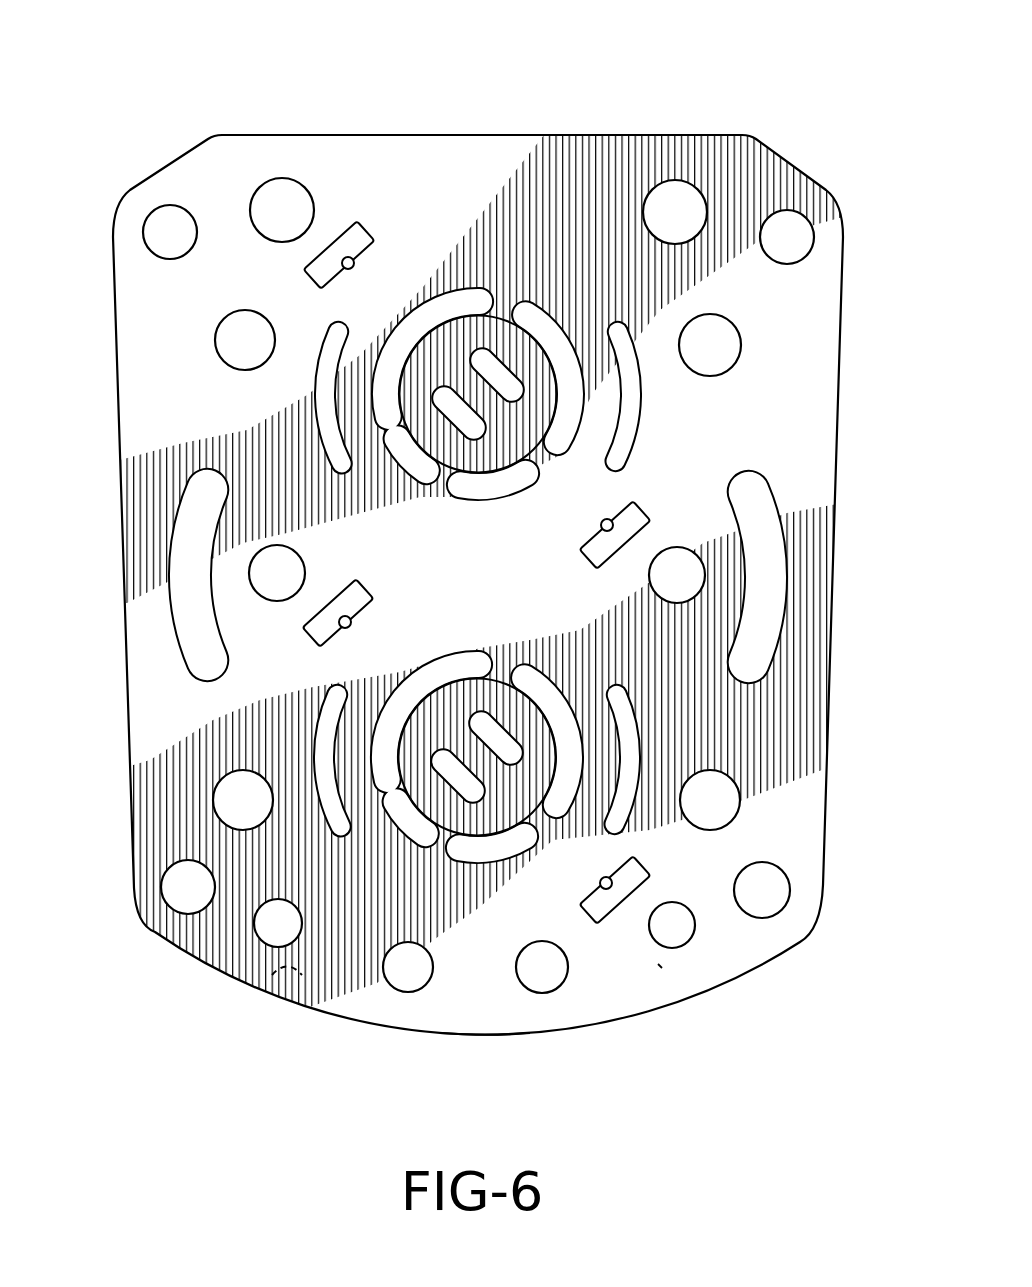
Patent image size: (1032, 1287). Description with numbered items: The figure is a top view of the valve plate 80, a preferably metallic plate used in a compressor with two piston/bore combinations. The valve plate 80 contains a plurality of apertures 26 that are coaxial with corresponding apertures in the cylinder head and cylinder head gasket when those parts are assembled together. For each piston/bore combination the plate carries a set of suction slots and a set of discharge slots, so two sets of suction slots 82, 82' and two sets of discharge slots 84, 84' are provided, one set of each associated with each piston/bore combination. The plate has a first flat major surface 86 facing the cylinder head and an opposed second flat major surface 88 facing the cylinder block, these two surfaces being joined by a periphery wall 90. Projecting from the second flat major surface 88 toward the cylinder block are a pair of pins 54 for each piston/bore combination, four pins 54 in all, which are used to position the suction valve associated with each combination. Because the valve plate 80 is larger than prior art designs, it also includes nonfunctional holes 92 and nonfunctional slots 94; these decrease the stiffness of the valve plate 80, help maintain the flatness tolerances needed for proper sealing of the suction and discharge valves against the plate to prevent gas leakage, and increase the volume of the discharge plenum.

The valve plate 80 is at (502, 126).
The apertures 26 is at (163, 243).
The pins 54 is at (346, 257).
The suction slots 82 is at (486, 249).
The suction slots 82' is at (464, 864).
The discharge slots 84 is at (360, 262).
The discharge slots 84' is at (474, 748).
The first flat major surface 86 is at (290, 977).
The second flat major surface 88 is at (662, 968).
The periphery wall 90 is at (485, 1037).
The nonfunctional holes 92 is at (235, 368).
The nonfunctional slots 94 is at (183, 627).